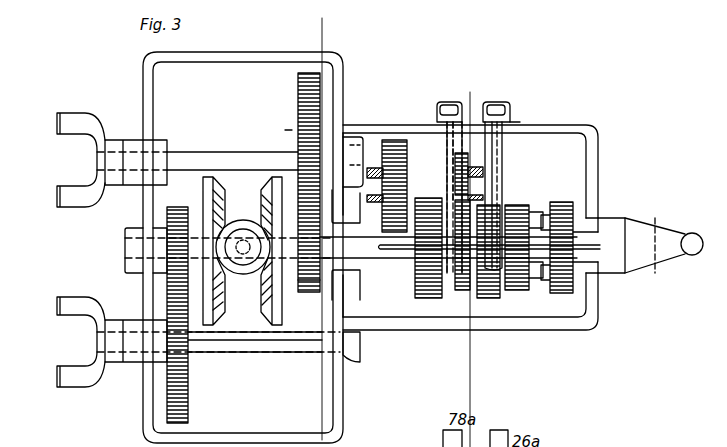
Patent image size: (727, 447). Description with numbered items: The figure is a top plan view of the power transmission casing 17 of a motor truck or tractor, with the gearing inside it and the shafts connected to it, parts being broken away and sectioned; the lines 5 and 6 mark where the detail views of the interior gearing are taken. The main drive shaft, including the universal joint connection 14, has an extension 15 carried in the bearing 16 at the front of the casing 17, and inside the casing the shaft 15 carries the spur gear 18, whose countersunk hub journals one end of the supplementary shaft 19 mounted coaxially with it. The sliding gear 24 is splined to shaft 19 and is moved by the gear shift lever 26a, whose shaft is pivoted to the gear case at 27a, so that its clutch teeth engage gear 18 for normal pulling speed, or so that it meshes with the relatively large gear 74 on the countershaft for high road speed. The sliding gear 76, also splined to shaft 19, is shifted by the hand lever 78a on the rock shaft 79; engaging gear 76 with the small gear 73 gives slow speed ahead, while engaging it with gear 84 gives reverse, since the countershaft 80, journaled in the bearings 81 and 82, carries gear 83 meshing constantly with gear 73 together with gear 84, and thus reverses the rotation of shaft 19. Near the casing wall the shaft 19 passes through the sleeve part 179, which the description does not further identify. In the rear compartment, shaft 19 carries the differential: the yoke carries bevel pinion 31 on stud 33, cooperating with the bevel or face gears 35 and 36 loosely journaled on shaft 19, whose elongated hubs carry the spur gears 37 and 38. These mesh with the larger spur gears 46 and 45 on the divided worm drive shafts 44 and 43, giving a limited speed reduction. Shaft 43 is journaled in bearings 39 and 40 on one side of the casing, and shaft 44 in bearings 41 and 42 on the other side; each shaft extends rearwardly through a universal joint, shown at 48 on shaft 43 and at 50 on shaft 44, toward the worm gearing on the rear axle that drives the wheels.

The section line 5 is at (356, 16).
The section line 6 is at (486, 97).
The universal joint connection 14 is at (668, 236).
The main drive shaft 15 is at (604, 232).
The bearing 16 is at (612, 274).
The transmission casing 17 is at (278, 52).
The spur gear 18 is at (562, 203).
The supplementary shaft 19 is at (460, 247).
The sliding gear 24 is at (515, 208).
The gear shift lever 26a is at (497, 100).
The pivot support 27a is at (510, 124).
The bevel pinion 31 is at (238, 222).
The stud 33 is at (244, 265).
The bevel gear 35 is at (208, 190).
The bevel gear 36 is at (290, 199).
The spur gear 37 is at (170, 212).
The spur gear 38 is at (311, 292).
The bearing 39 is at (133, 145).
The bearing 40 is at (350, 143).
The bearing 41 is at (135, 362).
The bearing 42 is at (360, 356).
The worm drive shaft 43 is at (230, 160).
The worm drive shaft 44 is at (246, 340).
The spur gear 45 is at (276, 131).
The spur gear 46 is at (188, 372).
The universal joint 48 is at (62, 118).
The universal joint 50 is at (62, 302).
The spur gear 73 is at (462, 290).
The spur gear 74 is at (497, 294).
The sliding gear 76 is at (416, 272).
The hand lever 78a is at (448, 102).
The rock shaft 79 is at (447, 147).
The countershaft 80 is at (426, 180).
The bearing 81 is at (485, 172).
The bearing 82 is at (363, 187).
The spur gear 83 is at (470, 160).
The spur gear 84 is at (401, 138).
The sleeve flange 179 is at (348, 222).